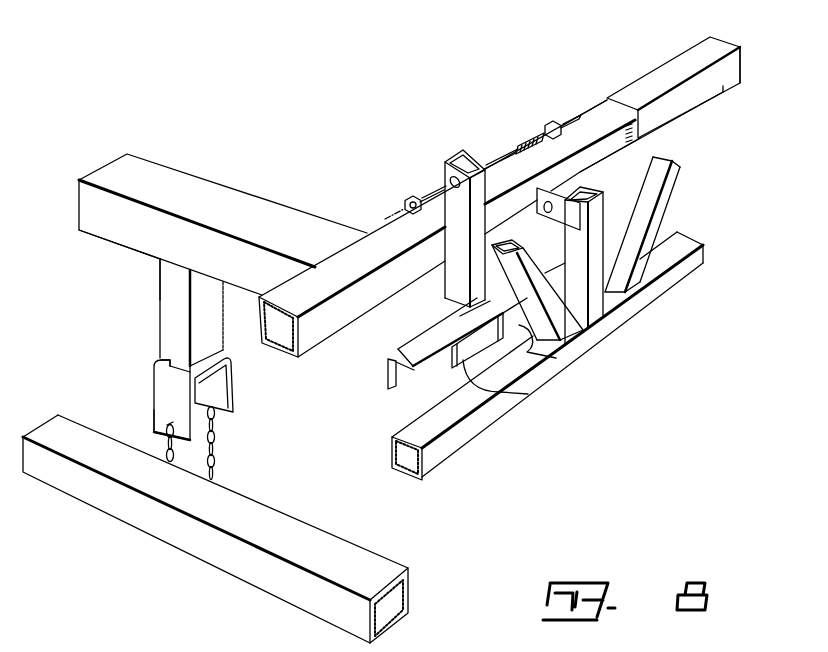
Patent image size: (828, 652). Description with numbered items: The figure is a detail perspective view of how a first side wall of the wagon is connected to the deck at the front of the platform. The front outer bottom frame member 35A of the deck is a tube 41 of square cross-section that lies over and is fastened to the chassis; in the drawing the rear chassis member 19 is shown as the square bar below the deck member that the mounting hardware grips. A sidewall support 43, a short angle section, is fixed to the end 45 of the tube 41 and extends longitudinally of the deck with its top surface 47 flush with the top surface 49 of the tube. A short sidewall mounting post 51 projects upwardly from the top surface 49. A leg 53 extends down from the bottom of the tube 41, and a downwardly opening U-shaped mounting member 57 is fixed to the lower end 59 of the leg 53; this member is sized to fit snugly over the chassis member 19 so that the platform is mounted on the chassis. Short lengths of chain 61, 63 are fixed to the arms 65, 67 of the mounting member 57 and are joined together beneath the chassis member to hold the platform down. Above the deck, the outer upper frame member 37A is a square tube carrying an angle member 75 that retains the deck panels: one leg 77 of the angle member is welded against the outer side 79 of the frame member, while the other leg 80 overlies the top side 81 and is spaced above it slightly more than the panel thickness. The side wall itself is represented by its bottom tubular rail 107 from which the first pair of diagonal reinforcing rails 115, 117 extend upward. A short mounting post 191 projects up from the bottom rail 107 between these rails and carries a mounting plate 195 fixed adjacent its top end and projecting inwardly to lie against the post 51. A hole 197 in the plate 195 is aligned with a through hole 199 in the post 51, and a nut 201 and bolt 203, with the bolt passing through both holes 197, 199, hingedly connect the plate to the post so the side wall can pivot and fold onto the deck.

The rear chassis member 19 is at (243, 588).
The outer bottom frame member 35A is at (143, 267).
The outer upper frame member 37A is at (586, 104).
The tube 41 is at (113, 247).
The sidewall support 43 is at (382, 381).
The end of tube 45 is at (490, 372).
The top surface of sidewall support 47 is at (404, 356).
The top surface of tube 49 is at (218, 186).
The sidewall mounting post 51 is at (443, 185).
The leg 53 is at (153, 330).
The U-shaped mounting member 57 is at (146, 393).
The lower end of leg 59 is at (165, 362).
The length of chain 61 is at (166, 449).
The length of chain 63 is at (218, 443).
The arm of mounting member 65 is at (152, 417).
The arm of mounting member 67 is at (233, 394).
The angle member 75 is at (642, 68).
The leg of angle member 77 is at (700, 91).
The outer side of frame member 79 is at (602, 155).
The other leg of angle member 80 is at (700, 50).
The top side of frame member 81 is at (575, 116).
The bottom tubular rail 107 is at (474, 440).
The diagonal reinforcing rail 115 is at (558, 348).
The diagonal reinforcing rail 117 is at (683, 163).
The mounting post 191 is at (606, 230).
The mounting plate 195 is at (545, 193).
The hole in plate 197 is at (545, 208).
The through hole 199 is at (452, 183).
The nut 201 is at (405, 203).
The bolt 203 is at (517, 144).